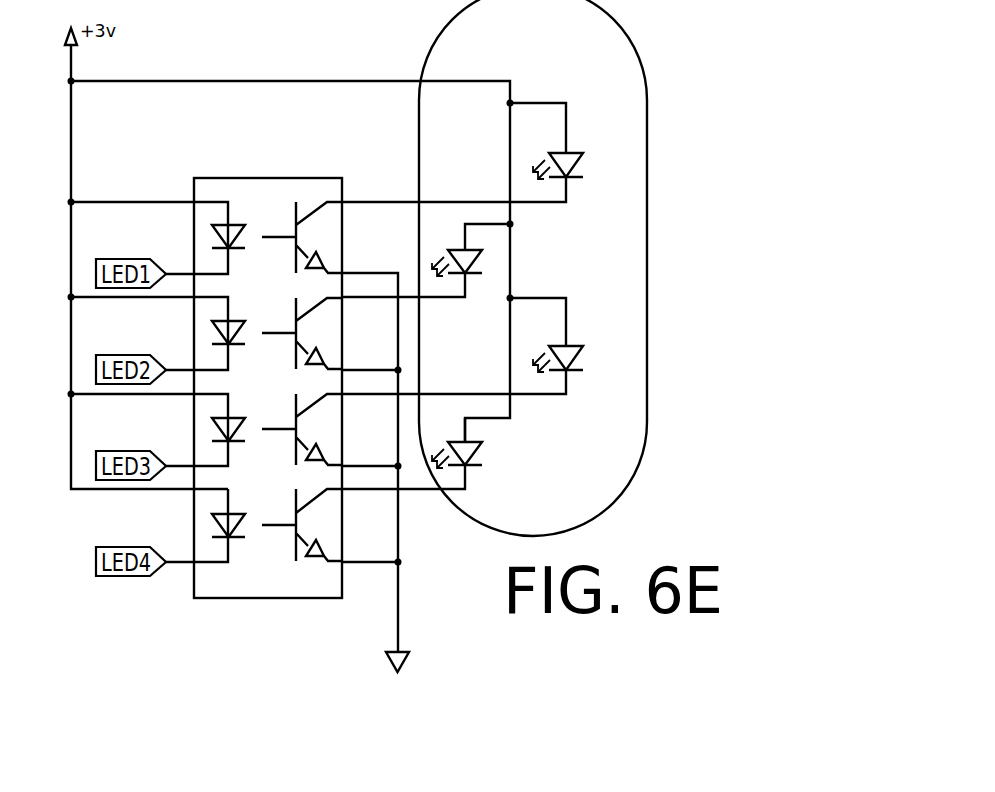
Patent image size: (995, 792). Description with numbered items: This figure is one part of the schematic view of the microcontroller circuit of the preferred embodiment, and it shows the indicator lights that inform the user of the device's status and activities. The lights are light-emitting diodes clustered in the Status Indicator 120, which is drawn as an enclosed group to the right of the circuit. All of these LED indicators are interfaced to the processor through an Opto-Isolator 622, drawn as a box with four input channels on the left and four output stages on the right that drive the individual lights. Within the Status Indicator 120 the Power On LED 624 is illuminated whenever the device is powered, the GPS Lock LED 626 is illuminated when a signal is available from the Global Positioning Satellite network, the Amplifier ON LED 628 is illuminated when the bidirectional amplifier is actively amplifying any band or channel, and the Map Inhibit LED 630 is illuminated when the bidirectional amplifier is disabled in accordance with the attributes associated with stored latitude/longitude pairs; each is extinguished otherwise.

The Status Indicator 120 is at (660, 82).
The Opto-Isolator 622 is at (185, 177).
The Power On LED 624 is at (590, 165).
The GPS Lock LED 626 is at (440, 252).
The Amplifier ON LED 628 is at (590, 357).
The Map Inhibit LED 630 is at (488, 453).